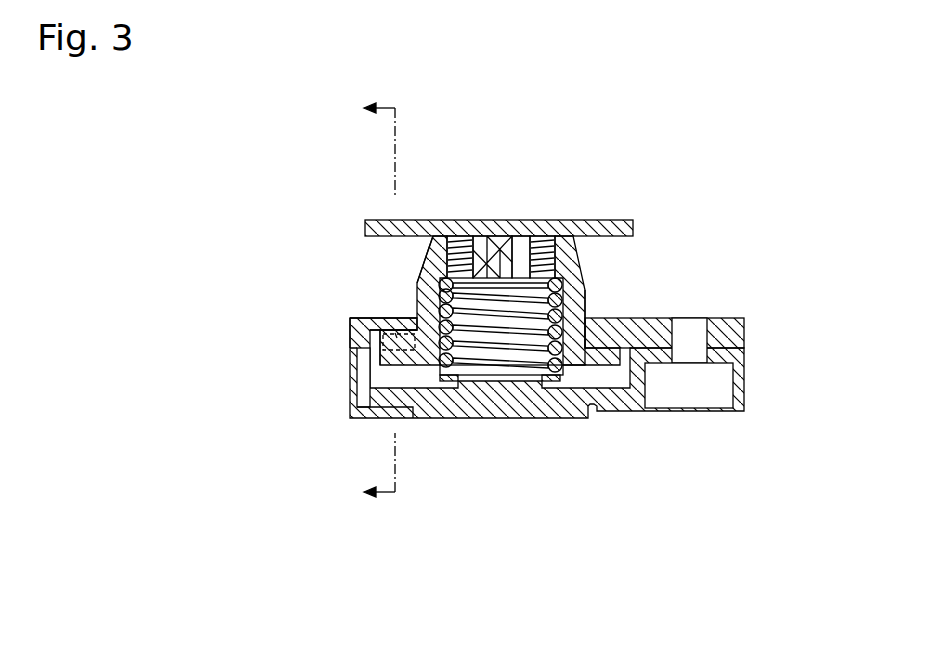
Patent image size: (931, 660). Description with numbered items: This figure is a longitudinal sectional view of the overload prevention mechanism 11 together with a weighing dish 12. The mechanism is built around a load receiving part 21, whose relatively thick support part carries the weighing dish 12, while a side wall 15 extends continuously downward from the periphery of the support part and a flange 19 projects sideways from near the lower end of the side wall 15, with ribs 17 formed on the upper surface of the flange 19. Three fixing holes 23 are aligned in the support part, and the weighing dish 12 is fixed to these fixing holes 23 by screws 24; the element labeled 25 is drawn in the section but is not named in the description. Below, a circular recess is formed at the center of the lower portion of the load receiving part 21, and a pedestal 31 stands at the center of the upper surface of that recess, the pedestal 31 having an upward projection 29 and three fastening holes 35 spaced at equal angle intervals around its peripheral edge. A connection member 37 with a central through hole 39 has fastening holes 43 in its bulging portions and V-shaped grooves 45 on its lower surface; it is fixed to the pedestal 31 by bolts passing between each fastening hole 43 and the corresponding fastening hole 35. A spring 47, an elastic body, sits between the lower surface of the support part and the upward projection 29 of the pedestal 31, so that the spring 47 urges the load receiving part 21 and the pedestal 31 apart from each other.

The overload prevention mechanism 11 is at (670, 133).
The weighing dish 12 is at (408, 230).
The side wall 15 is at (427, 268).
The ribs 17 is at (370, 342).
The flange 19 is at (397, 338).
The load receiving part 21 is at (597, 263).
The fixing holes 23 is at (453, 255).
The screws 24 is at (458, 240).
The central pin 25 is at (500, 250).
The upward projection 29 is at (480, 413).
The pedestal 31 is at (497, 408).
The fastening holes 35 is at (693, 356).
The connection member 37 is at (747, 325).
The through hole 39 is at (578, 310).
The fastening holes 43 is at (693, 328).
The V-shaped grooves 45 is at (392, 330).
The spring 47 is at (517, 348).